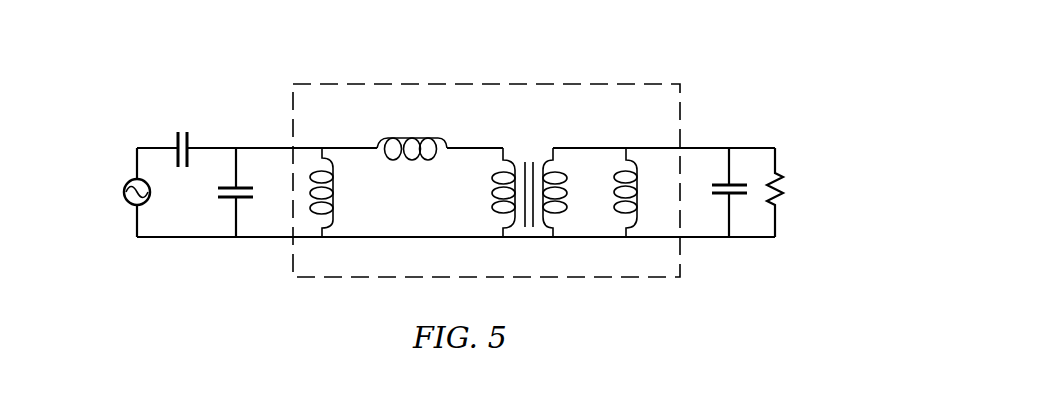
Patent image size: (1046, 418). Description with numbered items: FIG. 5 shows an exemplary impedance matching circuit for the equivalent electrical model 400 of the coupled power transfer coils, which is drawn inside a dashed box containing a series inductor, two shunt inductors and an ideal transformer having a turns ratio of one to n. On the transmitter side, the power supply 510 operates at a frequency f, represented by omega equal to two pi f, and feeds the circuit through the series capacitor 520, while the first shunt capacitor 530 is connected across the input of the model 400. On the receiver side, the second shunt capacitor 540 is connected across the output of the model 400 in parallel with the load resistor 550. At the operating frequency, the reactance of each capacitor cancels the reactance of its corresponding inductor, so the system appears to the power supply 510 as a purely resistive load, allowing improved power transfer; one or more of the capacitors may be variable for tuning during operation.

The second equivalent electrical model 400 is at (572, 84).
The power supply 510 is at (118, 217).
The series capacitor CS 520 is at (163, 138).
The shunt capacitor C1b 530 is at (224, 182).
The shunt capacitor C2b 540 is at (738, 167).
The load resistor R_Load 550 is at (795, 177).